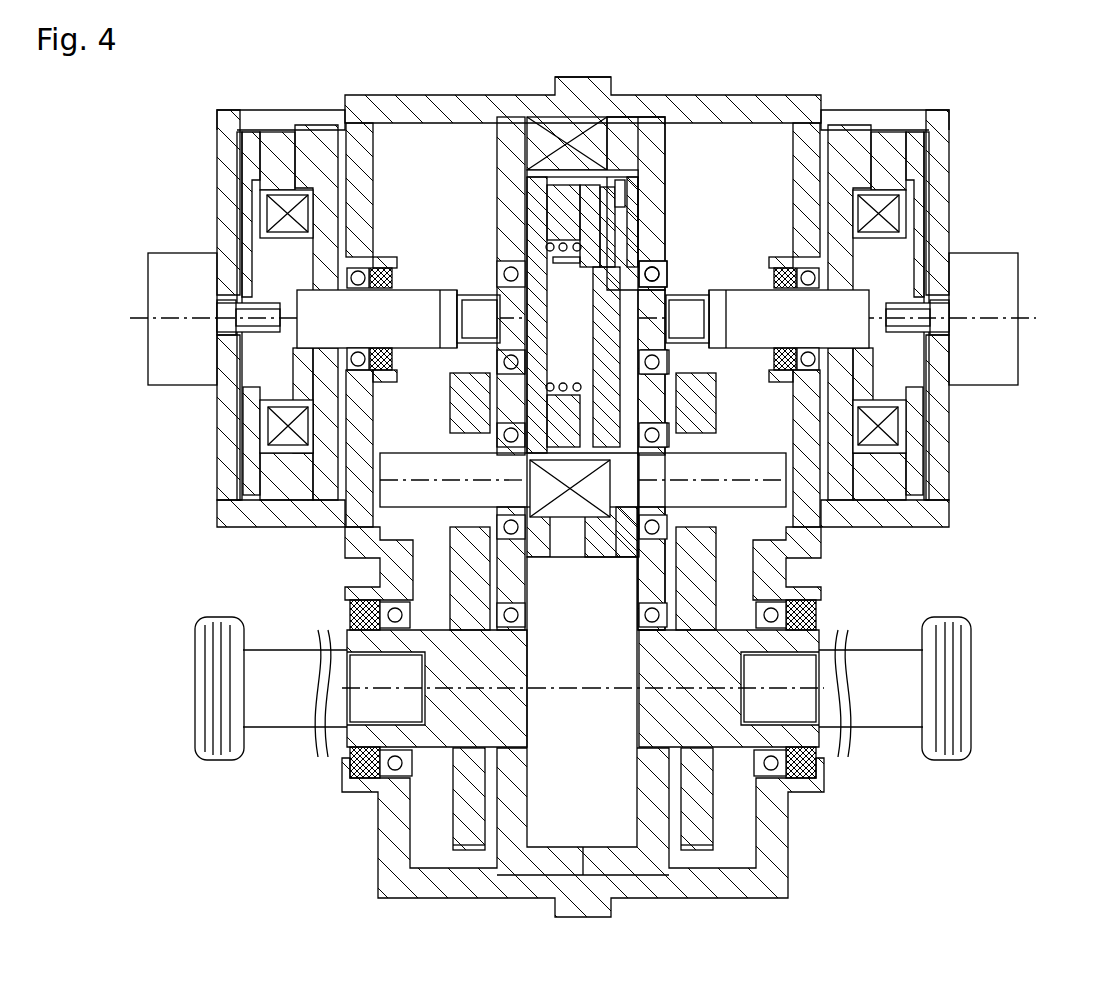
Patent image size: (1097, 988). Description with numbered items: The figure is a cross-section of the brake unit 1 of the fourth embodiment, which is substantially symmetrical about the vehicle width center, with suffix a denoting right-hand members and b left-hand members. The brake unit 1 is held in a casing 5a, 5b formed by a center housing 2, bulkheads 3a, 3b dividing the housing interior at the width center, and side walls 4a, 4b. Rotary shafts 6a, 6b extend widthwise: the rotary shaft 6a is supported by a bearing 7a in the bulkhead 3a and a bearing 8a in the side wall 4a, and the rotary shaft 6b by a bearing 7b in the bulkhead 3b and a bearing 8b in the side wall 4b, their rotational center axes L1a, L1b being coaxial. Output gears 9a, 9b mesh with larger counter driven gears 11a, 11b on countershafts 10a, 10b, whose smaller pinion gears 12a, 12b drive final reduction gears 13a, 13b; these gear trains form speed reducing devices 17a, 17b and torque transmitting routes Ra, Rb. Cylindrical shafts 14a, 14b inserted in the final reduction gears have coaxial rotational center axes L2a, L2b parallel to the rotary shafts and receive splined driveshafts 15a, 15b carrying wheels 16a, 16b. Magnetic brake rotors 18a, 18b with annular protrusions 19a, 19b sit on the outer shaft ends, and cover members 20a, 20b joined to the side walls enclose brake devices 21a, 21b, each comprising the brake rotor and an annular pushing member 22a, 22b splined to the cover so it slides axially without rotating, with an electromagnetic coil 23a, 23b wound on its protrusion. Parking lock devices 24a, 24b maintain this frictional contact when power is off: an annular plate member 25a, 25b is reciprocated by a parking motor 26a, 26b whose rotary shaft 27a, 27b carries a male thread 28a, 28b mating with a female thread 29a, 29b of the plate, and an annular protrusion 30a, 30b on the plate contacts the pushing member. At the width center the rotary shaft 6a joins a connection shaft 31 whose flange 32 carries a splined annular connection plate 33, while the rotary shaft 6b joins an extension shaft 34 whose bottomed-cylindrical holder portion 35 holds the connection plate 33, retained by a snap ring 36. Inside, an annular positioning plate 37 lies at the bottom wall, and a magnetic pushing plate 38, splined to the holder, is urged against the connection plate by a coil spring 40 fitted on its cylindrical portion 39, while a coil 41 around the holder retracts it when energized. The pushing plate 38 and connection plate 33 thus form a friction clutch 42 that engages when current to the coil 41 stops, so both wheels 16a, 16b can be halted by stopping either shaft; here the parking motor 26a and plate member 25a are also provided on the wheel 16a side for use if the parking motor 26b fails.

The brake unit 1 is at (292, 868).
The center housing 2 is at (722, 96).
The bulkhead 3a is at (655, 138).
The bulkhead 3b is at (497, 140).
The side wall 4a is at (800, 172).
The side wall 4b is at (360, 172).
The casing 5a is at (746, 72).
The casing 5b is at (420, 72).
The rotary shaft 6a is at (712, 330).
The rotary shaft 6b is at (448, 330).
The bearing 7a is at (658, 266).
The bearing 7b is at (538, 215).
The bearing 8a is at (820, 360).
The bearing 8b is at (345, 358).
The output gear 9a is at (742, 290).
The output gear 9b is at (432, 290).
The countershaft 10a is at (618, 580).
The countershaft 10b is at (547, 595).
The counter driven gear 11a is at (708, 405).
The counter driven gear 11b is at (465, 398).
The pinion gear 12a is at (879, 450).
The pinion gear 12b is at (287, 453).
The final reduction gear 13a is at (708, 838).
The final reduction gear 13b is at (458, 838).
The cylindrical shaft 14a is at (820, 742).
The cylindrical shaft 14b is at (346, 740).
The driveshaft 15a is at (892, 730).
The driveshaft 15b is at (267, 652).
The wheel 16a is at (955, 692).
The wheel 16b is at (220, 755).
The speed reducing device 17a is at (836, 548).
The speed reducing device 17b is at (330, 548).
The brake rotor 18a is at (835, 152).
The brake rotor 18b is at (332, 152).
The annular protrusion 19a is at (864, 153).
The annular protrusion 19b is at (300, 153).
The cover member 20a is at (936, 185).
The cover member 20b is at (232, 495).
The brake device 21a is at (958, 95).
The brake device 21b is at (188, 106).
The pushing member 22a is at (893, 152).
The pushing member 22b is at (272, 516).
The electromagnetic coil 23a is at (897, 210).
The electromagnetic coil 23b is at (282, 428).
The parking lock device 24a is at (1020, 412).
The parking lock device 24b is at (147, 420).
The plate member 25a is at (924, 470).
The plate member 25b is at (240, 177).
The parking motor 26a is at (1000, 372).
The parking motor 26b is at (165, 330).
The rotary shaft 27a is at (949, 310).
The rotary shaft 27b is at (217, 310).
The male thread 28a is at (941, 310).
The male thread 28b is at (226, 327).
The female thread 29a is at (926, 318).
The female thread 29b is at (240, 316).
The annular protrusion 30a is at (912, 500).
The annular protrusion 30b is at (253, 157).
The connection shaft 31 is at (692, 296).
The flange 32 is at (610, 230).
The connection plate 33 is at (592, 200).
The extension shaft 34 is at (476, 293).
The holder portion 35 is at (558, 172).
The snap ring 36 is at (626, 190).
The positioning plate 37 is at (553, 178).
The pushing plate 38 is at (632, 175).
The cylindrical portion 39 is at (566, 264).
The coil spring 40 is at (566, 378).
The coil 41 is at (575, 125).
The friction clutch 42 is at (665, 72).
The rotational center axis L1a is at (952, 280).
The rotational center axis L1b is at (226, 300).
The rotational center axis L2a is at (804, 684).
The rotational center axis L2b is at (362, 684).
The torque transmitting route Ra is at (758, 140).
The torque transmitting route Rb is at (408, 140).